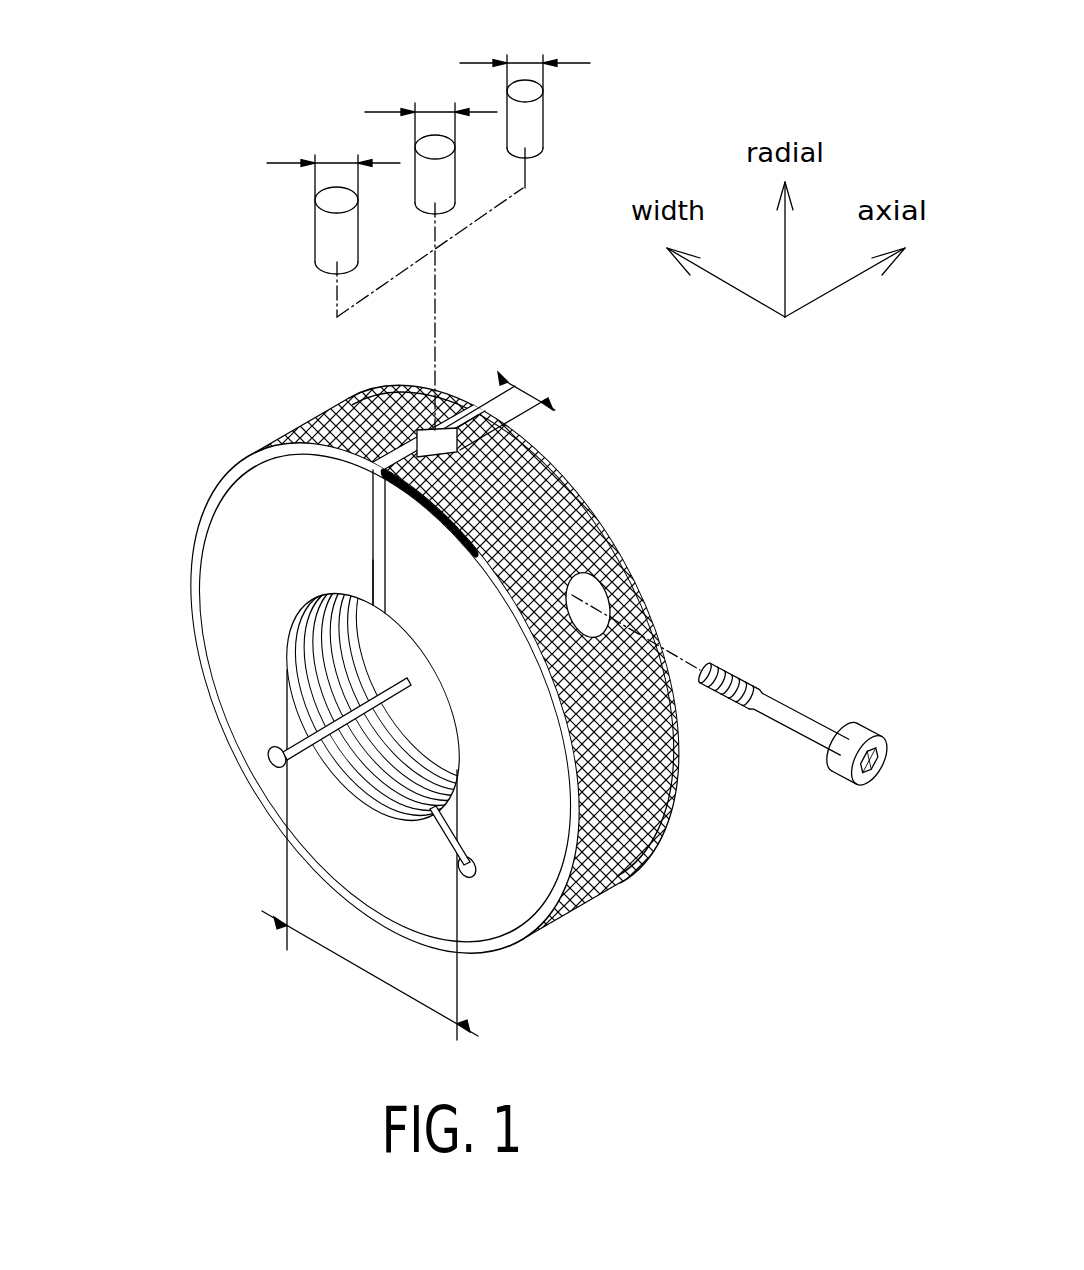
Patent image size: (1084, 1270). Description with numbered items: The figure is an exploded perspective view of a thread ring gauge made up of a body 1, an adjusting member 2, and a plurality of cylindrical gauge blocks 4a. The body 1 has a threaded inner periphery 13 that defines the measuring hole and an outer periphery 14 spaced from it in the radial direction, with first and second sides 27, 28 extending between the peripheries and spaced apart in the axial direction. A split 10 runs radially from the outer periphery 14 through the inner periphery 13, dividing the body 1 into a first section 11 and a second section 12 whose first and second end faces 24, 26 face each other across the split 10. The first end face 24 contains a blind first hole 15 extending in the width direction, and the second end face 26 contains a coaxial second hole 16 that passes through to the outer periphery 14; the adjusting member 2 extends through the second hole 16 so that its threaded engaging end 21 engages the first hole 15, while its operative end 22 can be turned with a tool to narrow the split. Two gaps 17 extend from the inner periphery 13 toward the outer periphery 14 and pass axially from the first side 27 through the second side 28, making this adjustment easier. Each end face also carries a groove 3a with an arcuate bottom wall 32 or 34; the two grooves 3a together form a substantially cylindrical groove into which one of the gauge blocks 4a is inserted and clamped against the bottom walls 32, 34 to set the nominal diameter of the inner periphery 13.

The body 1 is at (441, 594).
The adjusting member 2 is at (801, 678).
The first and second grooves 3a is at (451, 363).
The gauge blocks 4a is at (322, 230).
The split 10 is at (356, 687).
The first section 11 is at (235, 518).
The second section 12 is at (530, 793).
The inner periphery 13 is at (373, 770).
The outer periphery 14 is at (477, 663).
The first hole 15 is at (332, 432).
The second hole 16 is at (587, 587).
The gaps 17 is at (326, 859).
The threaded engaging end 21 is at (724, 668).
The operative end 22 is at (850, 738).
The first end face 24 is at (297, 537).
The second end face 26 is at (386, 586).
The first side 27 is at (260, 753).
The second side 28 is at (603, 517).
The bottom wall 32 is at (437, 433).
The bottom wall 34 is at (452, 423).